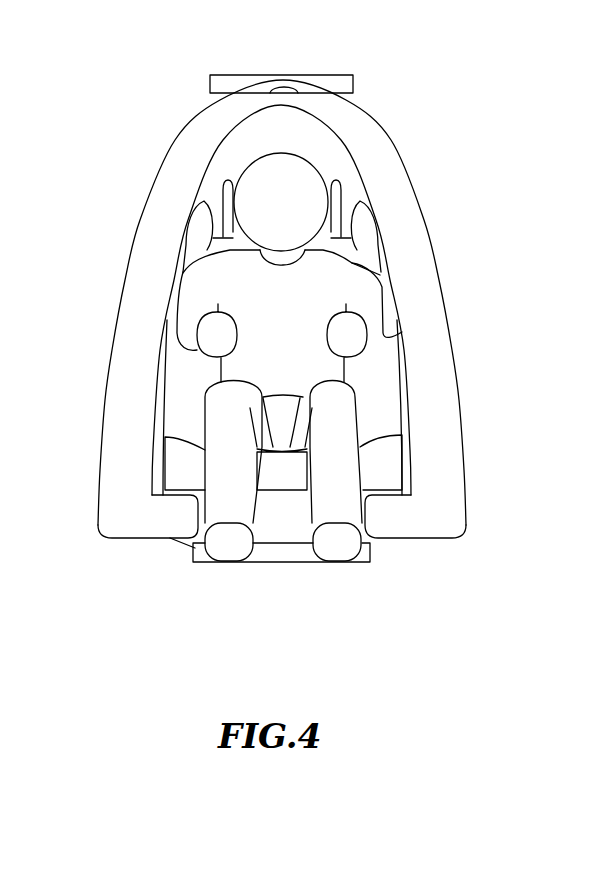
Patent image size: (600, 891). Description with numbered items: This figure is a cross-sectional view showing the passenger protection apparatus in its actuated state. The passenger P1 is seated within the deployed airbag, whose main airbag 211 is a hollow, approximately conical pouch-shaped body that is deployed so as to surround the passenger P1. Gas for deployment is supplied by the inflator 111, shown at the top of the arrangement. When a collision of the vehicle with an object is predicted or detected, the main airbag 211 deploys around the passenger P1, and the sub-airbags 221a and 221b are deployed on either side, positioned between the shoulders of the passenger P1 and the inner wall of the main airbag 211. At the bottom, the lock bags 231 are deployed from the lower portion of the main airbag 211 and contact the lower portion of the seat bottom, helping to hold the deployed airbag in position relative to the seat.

The inflator 111 is at (288, 80).
The main airbag 211 is at (122, 367).
The sub-airbag 221a is at (194, 213).
The sub-airbag 221b is at (363, 223).
The lock bag 231 is at (178, 516).
The passenger P1 is at (340, 155).